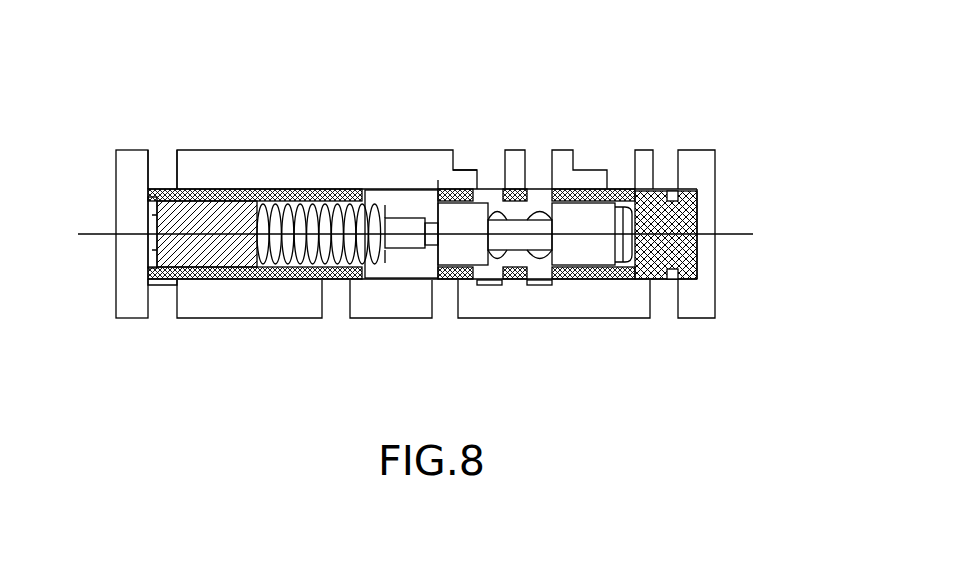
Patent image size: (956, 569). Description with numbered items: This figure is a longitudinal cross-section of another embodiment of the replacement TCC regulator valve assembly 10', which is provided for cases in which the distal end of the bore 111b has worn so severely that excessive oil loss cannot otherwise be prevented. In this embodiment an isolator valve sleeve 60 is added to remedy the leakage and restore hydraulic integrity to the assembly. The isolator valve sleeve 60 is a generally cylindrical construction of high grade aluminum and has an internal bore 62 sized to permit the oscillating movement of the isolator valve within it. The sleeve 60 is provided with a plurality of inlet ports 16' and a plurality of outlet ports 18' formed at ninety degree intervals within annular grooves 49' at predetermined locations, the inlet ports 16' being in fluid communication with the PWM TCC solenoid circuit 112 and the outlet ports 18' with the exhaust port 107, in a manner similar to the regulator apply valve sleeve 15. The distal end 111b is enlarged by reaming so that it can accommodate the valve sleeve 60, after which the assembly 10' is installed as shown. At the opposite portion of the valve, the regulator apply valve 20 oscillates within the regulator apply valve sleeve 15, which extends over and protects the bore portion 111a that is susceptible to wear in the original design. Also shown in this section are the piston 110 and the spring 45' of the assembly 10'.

The TCC regulator valve assembly 10' is at (415, 121).
The inlet ports 16' is at (415, 283).
The PWM TCC solenoid circuit 112 is at (165, 127).
The outlet ports 18' is at (422, 201).
The isolator valve sleeve 60 is at (258, 184).
The exhaust port 107 is at (350, 281).
The annular grooves 49' is at (115, 181).
The piston 110 is at (287, 312).
The spring 45' is at (315, 293).
The internal bore 62 is at (382, 279).
The distal end of the bore 111b is at (397, 189).
The regulator apply valve 20 is at (516, 262).
The regulator apply valve sleeve 15 is at (595, 289).
The bore portion 111a is at (716, 194).